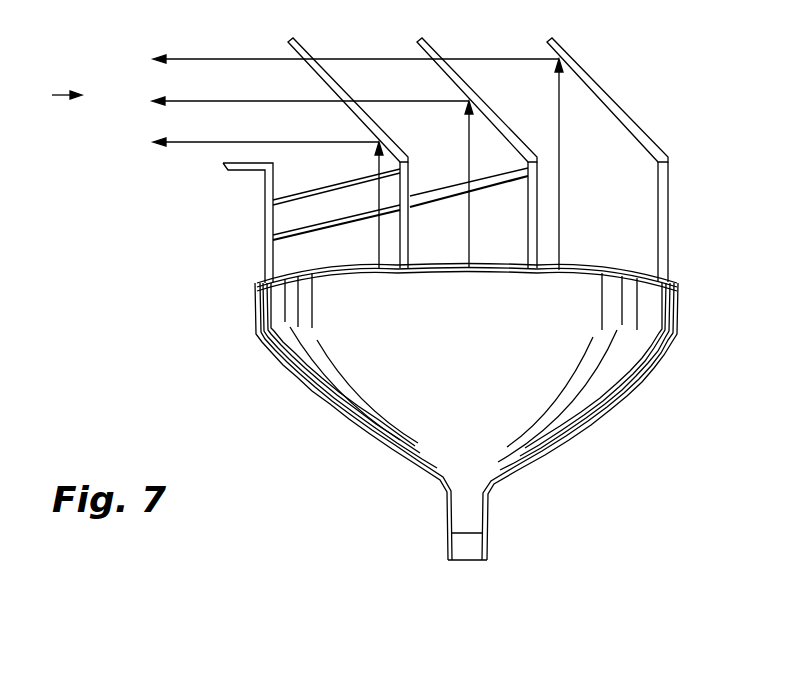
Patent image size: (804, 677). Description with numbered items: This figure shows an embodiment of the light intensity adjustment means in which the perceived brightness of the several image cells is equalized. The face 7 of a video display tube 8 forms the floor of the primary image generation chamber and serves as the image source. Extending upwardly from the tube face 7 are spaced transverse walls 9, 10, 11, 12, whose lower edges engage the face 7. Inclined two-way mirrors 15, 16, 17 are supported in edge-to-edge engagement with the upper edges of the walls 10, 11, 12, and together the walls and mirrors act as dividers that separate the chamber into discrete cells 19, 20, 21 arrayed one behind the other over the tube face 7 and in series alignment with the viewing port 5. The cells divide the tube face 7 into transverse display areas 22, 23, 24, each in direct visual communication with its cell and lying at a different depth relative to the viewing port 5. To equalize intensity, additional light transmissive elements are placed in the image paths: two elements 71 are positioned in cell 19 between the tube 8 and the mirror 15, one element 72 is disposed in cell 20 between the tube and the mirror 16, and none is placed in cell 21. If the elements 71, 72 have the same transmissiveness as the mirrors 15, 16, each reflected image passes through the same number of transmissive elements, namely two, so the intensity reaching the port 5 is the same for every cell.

The viewing port 5 is at (296, 100).
The face of video display tube 7 is at (618, 258).
The video display tube 8 is at (390, 452).
The front wall 9 is at (265, 257).
The transverse wall 10 is at (410, 226).
The transverse wall 11 is at (533, 232).
The transverse wall 12 is at (670, 238).
The two-way mirror 15 is at (304, 50).
The two-way mirror 16 is at (432, 48).
The two-way mirror 17 is at (560, 55).
The cell 19 is at (322, 168).
The cell 20 is at (436, 134).
The cell 21 is at (611, 168).
The display area 22 is at (339, 265).
The display area 23 is at (498, 260).
The display area 24 is at (595, 268).
The light transmissive element 71 is at (290, 230).
The light transmissive element 72 is at (477, 190).